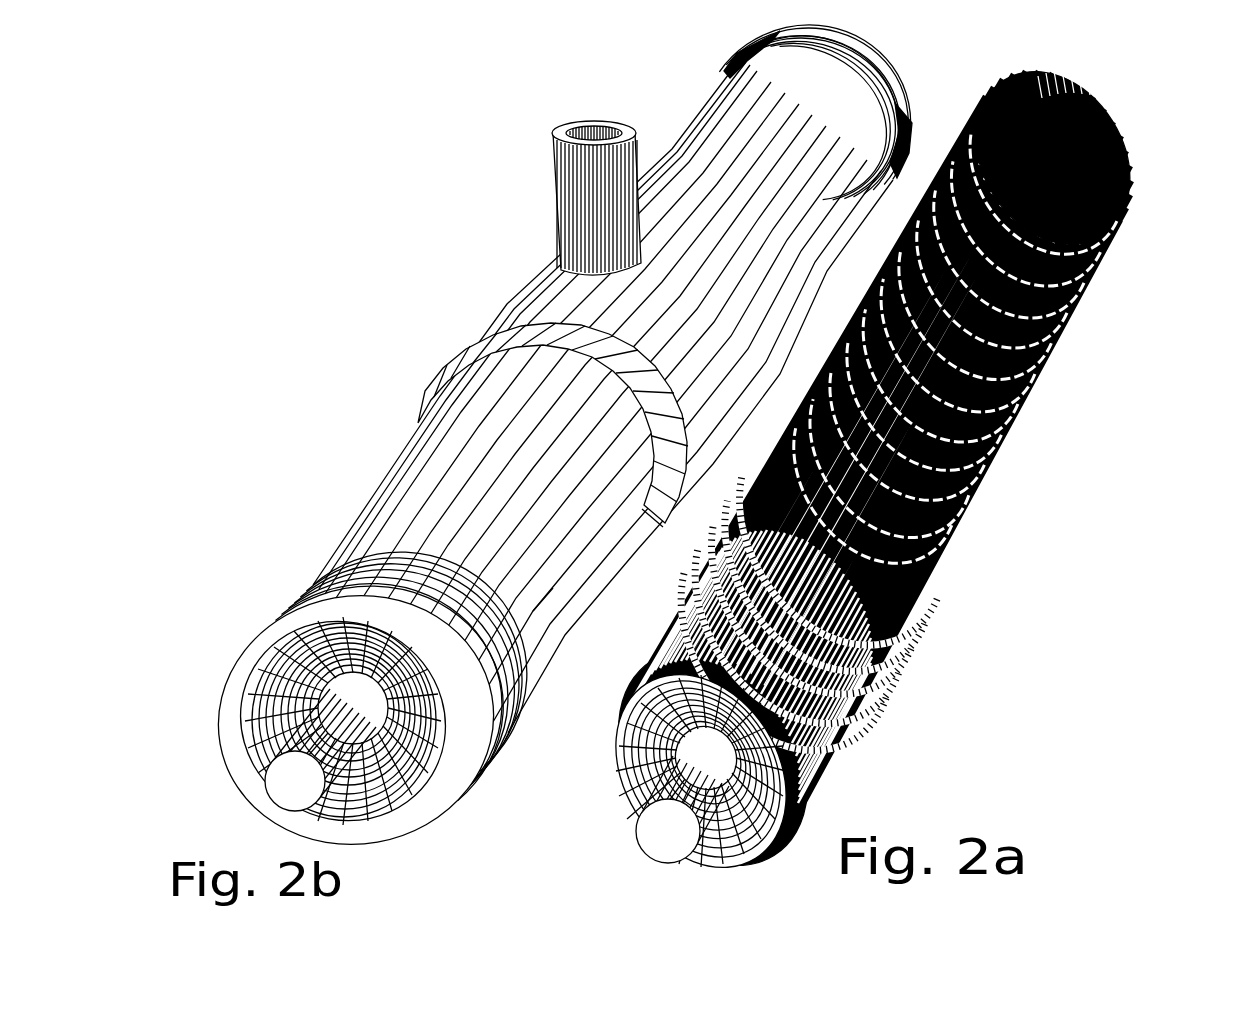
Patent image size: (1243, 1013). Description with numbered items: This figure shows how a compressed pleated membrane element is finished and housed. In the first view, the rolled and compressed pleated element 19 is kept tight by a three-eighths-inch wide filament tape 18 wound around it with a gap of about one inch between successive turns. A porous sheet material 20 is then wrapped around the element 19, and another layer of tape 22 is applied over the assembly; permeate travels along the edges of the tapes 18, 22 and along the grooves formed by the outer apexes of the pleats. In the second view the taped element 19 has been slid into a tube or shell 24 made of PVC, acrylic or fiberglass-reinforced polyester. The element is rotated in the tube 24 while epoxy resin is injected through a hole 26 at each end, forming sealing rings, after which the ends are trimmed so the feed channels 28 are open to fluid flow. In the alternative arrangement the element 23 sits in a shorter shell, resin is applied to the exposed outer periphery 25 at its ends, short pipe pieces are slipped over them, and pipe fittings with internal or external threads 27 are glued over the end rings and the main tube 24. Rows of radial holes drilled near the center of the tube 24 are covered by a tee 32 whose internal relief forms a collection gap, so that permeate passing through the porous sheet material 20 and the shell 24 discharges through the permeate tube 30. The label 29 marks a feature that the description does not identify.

In FIG. 2A, the filament tape 18 is at (900, 620).
In FIG. 2A, the element 19 is at (848, 712).
In FIG. 2A, the porous sheet material 20 is at (988, 462).
In FIG. 2A, the tape 22 is at (1070, 310).
In FIG. 2A, the element 23 is at (1155, 142).
In FIG. 2B, the tube or shell 24 is at (347, 497).
In FIG. 2A, the exposed outer periphery 25 is at (1143, 118).
In FIG. 2B, the hole 26 is at (270, 577).
In FIG. 2B, the pipe fittings with internal or external threads 27 is at (891, 97).
In FIG. 2B, the feed channels 28 is at (243, 776).
In FIG. 2B, the jacket surface 29 is at (542, 655).
In FIG. 2B, the permeate discharge tube 30 is at (545, 252).
In FIG. 2B, the tee 32 is at (465, 328).